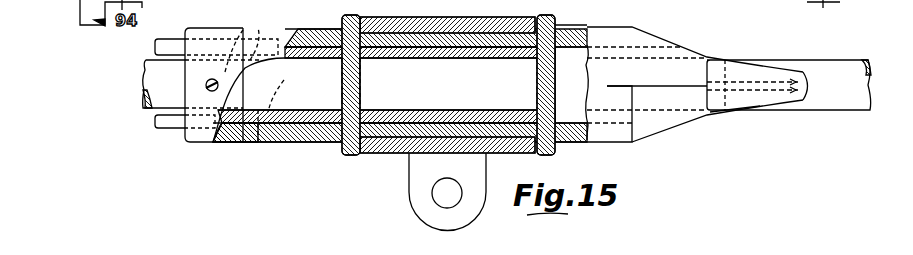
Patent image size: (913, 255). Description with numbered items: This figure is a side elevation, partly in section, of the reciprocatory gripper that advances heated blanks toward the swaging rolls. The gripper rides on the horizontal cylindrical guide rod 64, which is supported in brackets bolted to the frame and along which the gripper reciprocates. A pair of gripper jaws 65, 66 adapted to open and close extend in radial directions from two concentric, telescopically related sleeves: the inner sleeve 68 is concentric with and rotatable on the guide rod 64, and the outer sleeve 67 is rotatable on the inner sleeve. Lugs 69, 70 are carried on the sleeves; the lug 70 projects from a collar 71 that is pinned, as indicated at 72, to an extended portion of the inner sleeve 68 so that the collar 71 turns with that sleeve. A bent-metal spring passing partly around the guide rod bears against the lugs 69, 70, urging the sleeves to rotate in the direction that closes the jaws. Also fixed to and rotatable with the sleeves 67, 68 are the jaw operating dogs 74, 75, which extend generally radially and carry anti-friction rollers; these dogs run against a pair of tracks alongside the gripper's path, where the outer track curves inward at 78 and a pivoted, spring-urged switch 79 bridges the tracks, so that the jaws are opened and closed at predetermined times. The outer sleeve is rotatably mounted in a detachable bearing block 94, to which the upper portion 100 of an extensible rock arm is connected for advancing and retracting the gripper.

The guide rod 64 is at (143, 93).
The gripper jaw 65 is at (752, 70).
The gripper jaw 66 is at (752, 106).
The outer sleeve 67 is at (567, 40).
The inner sleeve 68 is at (513, 118).
The lug 69 is at (167, 52).
The lug 70 is at (172, 124).
The collar 71 is at (213, 33).
The pin 72 is at (205, 86).
The jaw operating dog 74 is at (261, 134).
The jaw operating dog 75 is at (254, 32).
The curved portion of outer track 78 is at (823, 8).
The switch 79 is at (898, 5).
The bearing block 94 is at (416, 187).
The upper portion of rock arm 100 is at (80, 15).